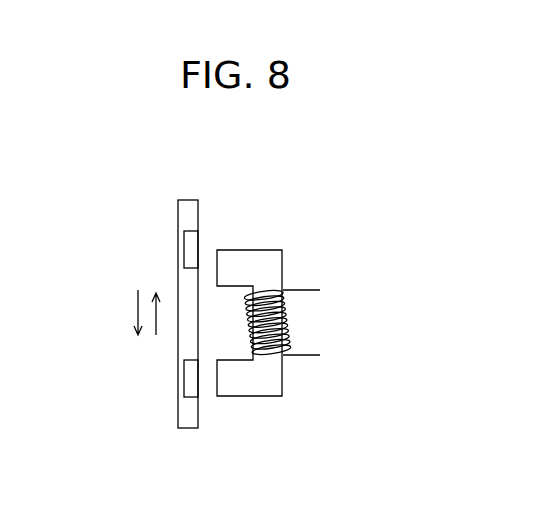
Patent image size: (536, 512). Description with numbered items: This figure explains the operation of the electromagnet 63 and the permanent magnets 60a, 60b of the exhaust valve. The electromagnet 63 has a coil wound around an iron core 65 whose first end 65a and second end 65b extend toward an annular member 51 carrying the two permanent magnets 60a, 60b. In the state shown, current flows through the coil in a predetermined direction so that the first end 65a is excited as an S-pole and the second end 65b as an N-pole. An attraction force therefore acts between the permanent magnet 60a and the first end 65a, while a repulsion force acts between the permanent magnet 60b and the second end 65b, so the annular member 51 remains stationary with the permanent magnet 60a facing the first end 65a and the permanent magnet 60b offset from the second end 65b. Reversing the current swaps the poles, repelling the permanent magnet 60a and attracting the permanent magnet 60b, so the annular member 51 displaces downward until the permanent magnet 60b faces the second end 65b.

The annular member 51 is at (188, 210).
The permanent magnet 60a is at (190, 385).
The permanent magnet 60b is at (190, 247).
The electromagnet 63 is at (283, 262).
The iron core 65 is at (270, 377).
The first end 65a is at (243, 385).
The second end 65b is at (245, 258).